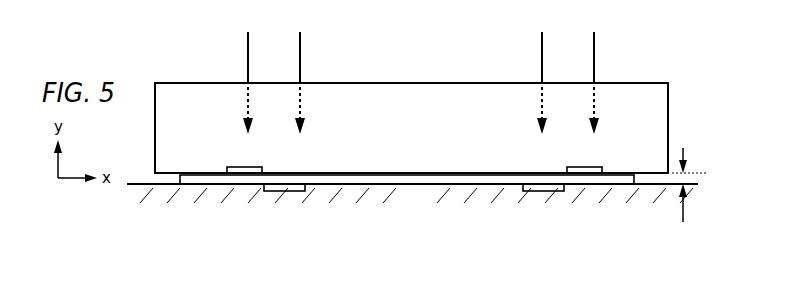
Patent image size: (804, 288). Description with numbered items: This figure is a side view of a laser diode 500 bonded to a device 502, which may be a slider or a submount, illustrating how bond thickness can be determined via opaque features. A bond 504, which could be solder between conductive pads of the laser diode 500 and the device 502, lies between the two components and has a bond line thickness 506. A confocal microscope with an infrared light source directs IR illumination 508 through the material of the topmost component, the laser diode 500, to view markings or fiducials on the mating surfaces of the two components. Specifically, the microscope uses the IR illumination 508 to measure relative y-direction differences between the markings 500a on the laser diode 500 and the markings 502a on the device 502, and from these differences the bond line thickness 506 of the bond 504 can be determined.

The laser diode 500 is at (438, 133).
The markings 500a is at (245, 173).
The device 502 is at (430, 208).
The markings 502a is at (282, 192).
The bond 504 is at (180, 176).
The bond line thickness 506 is at (689, 174).
The IR illumination 508 is at (247, 57).